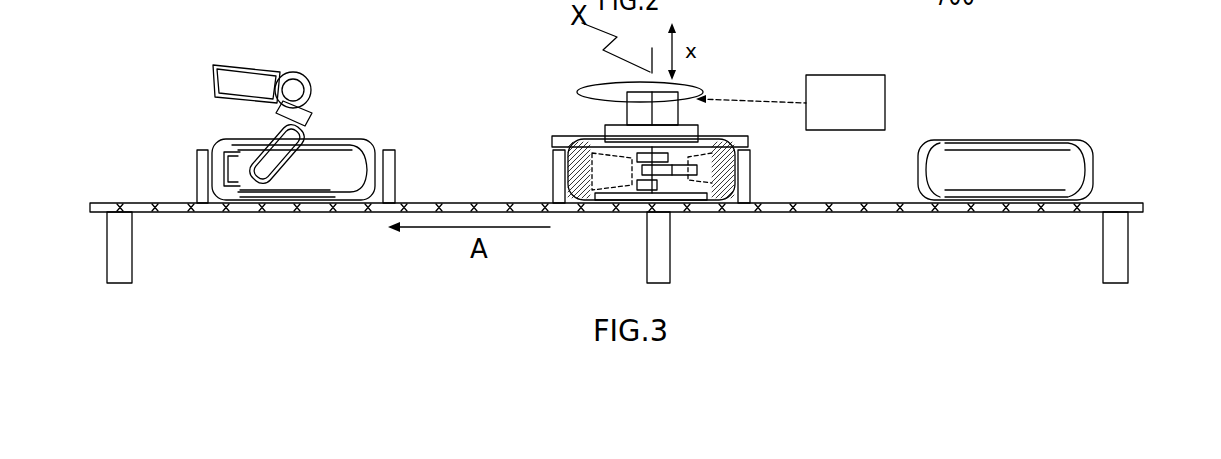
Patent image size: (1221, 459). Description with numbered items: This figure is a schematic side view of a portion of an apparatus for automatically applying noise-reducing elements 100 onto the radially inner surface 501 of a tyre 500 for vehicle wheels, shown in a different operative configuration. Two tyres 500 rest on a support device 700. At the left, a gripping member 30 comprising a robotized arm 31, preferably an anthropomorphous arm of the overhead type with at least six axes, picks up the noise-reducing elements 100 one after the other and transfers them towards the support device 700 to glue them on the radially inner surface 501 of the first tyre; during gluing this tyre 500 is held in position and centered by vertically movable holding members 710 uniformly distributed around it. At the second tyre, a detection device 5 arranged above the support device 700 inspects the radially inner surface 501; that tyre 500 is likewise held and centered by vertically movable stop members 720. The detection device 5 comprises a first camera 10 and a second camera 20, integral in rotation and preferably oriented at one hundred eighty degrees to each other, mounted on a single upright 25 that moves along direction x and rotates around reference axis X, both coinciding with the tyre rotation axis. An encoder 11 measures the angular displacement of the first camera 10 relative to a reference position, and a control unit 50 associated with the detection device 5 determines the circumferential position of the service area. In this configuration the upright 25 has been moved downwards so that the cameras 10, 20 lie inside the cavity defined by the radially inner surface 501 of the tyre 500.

The detection device 5 is at (693, 76).
The first camera 10 is at (682, 189).
The encoder 11 is at (673, 162).
The second camera 20 is at (614, 172).
The upright 25 is at (642, 110).
The gripping member 30 is at (215, 96).
The robotized arm 31 is at (253, 88).
The control unit 50 is at (862, 105).
The noise-reducing element 100 is at (223, 198).
The tyre 500 is at (373, 140).
The radially inner surface 501 is at (362, 165).
The support device 700 is at (870, 232).
The holding member 710 is at (198, 206).
The stop member 720 is at (553, 180).